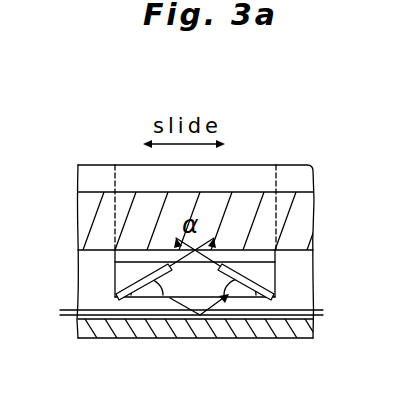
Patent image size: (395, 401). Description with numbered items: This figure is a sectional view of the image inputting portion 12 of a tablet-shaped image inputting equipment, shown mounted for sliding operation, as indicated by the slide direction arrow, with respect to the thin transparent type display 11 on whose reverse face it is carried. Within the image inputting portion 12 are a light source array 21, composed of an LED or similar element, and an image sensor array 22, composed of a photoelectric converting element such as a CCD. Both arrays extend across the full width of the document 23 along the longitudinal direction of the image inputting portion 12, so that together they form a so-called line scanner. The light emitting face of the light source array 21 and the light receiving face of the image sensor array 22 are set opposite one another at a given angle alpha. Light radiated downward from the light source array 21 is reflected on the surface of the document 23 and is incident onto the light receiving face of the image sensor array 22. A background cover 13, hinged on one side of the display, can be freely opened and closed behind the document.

The thin transparent type display 11 is at (292, 203).
The image inputting portion 12 is at (117, 275).
The background cover 13 is at (188, 328).
The light source array 21 is at (143, 298).
The image sensor array 22 is at (246, 297).
The document 23 is at (323, 316).